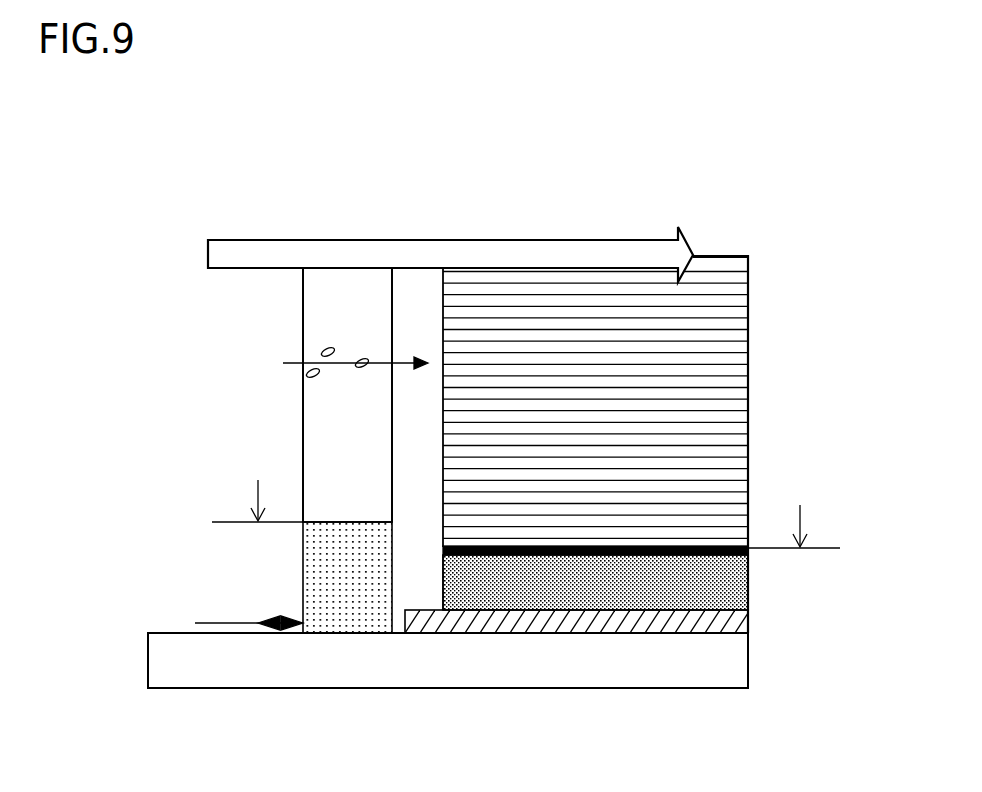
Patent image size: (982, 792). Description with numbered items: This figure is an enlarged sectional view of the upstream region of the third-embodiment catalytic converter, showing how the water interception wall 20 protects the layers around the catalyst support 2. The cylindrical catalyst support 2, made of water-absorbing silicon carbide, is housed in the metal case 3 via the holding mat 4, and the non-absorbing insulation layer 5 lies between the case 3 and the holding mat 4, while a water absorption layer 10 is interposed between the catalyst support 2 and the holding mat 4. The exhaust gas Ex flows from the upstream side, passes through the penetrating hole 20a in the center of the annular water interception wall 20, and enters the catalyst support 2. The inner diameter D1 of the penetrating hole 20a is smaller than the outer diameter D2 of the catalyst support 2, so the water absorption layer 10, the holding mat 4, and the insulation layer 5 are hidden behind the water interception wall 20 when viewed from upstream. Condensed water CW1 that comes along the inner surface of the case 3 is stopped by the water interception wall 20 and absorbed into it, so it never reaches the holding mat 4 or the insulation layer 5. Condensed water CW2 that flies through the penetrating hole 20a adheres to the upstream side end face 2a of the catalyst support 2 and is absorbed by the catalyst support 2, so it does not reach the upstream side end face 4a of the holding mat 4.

The catalyst support 2 is at (728, 373).
The upstream side end face of the catalyst support 2a is at (443, 482).
The case 3 is at (703, 680).
The holding mat 4 is at (737, 590).
The upstream side end face of the holding mat 4a is at (443, 585).
The insulation layer 5 is at (738, 625).
The water absorption layer 10 is at (748, 551).
The water interception wall 20 is at (345, 633).
The penetrating hole 20a is at (333, 450).
The exhaust gas Ex is at (268, 240).
The condensed water coming along the inner surface of the case CW1 is at (296, 616).
The condensed water flying through the penetrating hole CW2 is at (325, 348).
The inner diameter of the penetrating hole D1 is at (256, 498).
The outer diameter of the catalyst support D2 is at (799, 522).